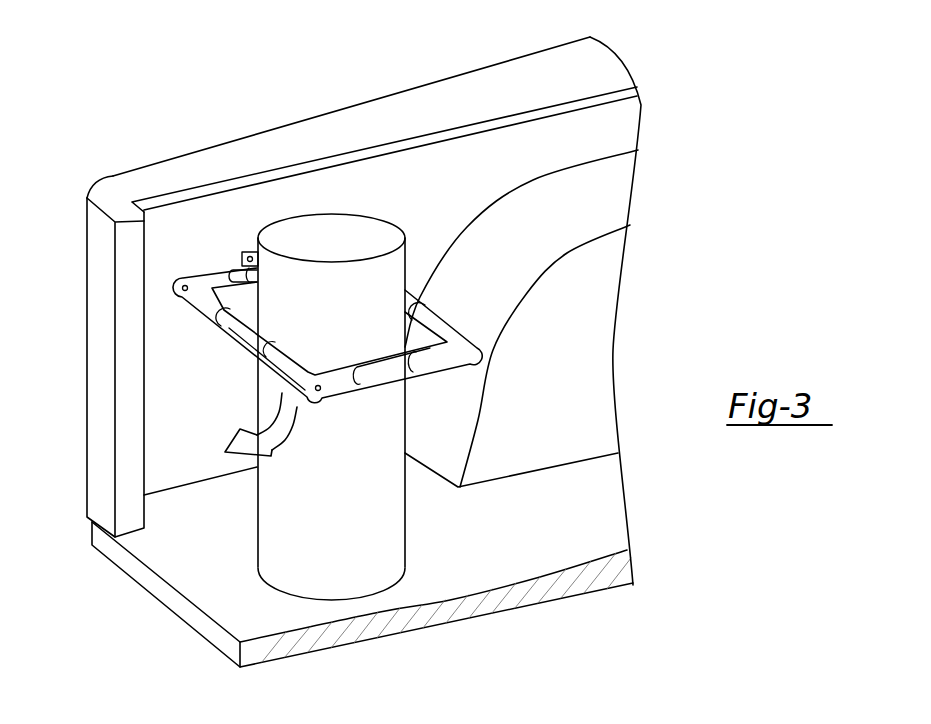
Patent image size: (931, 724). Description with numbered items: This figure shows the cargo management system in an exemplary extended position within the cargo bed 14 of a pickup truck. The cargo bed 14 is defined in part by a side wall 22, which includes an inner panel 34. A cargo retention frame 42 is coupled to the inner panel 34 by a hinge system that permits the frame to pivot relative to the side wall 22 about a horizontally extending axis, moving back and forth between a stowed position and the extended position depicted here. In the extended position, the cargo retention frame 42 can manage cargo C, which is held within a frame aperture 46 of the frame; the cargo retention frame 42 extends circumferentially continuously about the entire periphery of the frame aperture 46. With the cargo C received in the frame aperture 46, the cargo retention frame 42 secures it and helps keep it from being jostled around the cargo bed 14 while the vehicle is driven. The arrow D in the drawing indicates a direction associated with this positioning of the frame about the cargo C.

The cargo bed 14 is at (488, 157).
The side wall 22 is at (292, 147).
The inner panel 34 is at (408, 188).
The cargo retention frame 42 is at (450, 332).
The frame aperture 46 is at (244, 306).
The cargo C is at (372, 541).
The direction of rotation D is at (268, 418).